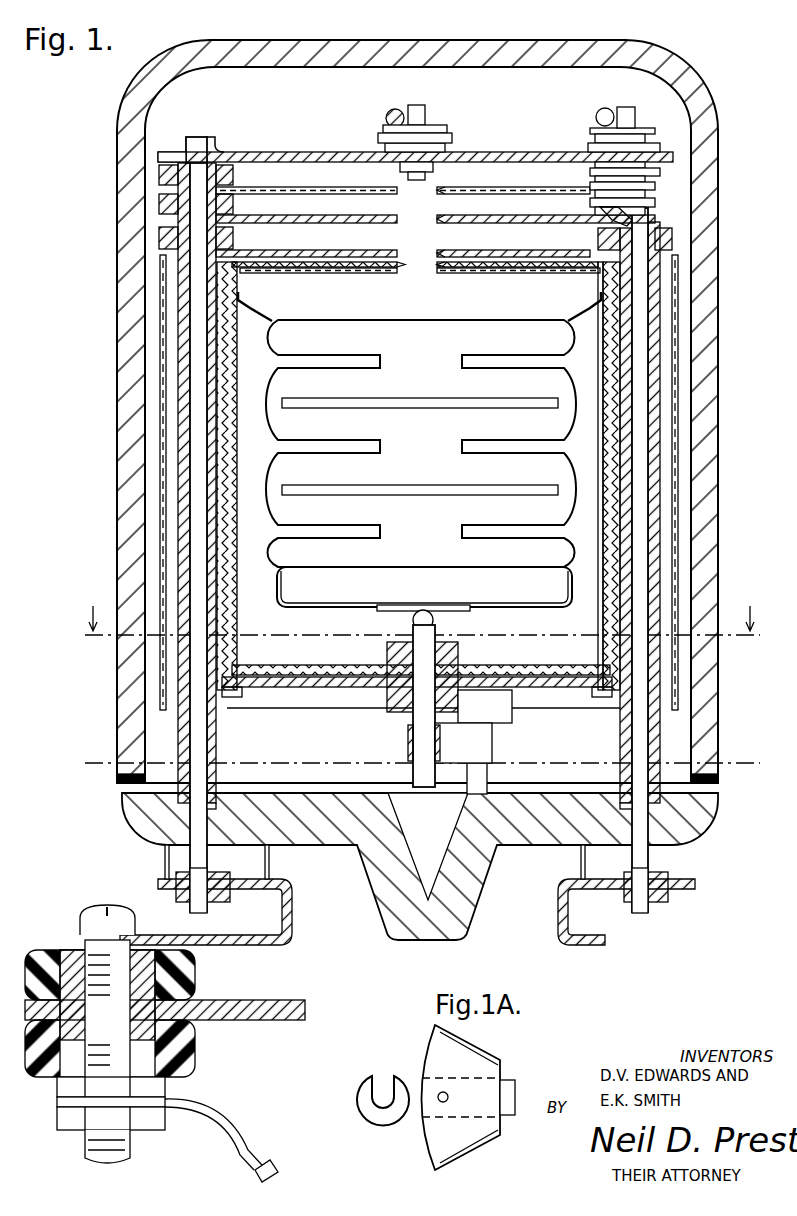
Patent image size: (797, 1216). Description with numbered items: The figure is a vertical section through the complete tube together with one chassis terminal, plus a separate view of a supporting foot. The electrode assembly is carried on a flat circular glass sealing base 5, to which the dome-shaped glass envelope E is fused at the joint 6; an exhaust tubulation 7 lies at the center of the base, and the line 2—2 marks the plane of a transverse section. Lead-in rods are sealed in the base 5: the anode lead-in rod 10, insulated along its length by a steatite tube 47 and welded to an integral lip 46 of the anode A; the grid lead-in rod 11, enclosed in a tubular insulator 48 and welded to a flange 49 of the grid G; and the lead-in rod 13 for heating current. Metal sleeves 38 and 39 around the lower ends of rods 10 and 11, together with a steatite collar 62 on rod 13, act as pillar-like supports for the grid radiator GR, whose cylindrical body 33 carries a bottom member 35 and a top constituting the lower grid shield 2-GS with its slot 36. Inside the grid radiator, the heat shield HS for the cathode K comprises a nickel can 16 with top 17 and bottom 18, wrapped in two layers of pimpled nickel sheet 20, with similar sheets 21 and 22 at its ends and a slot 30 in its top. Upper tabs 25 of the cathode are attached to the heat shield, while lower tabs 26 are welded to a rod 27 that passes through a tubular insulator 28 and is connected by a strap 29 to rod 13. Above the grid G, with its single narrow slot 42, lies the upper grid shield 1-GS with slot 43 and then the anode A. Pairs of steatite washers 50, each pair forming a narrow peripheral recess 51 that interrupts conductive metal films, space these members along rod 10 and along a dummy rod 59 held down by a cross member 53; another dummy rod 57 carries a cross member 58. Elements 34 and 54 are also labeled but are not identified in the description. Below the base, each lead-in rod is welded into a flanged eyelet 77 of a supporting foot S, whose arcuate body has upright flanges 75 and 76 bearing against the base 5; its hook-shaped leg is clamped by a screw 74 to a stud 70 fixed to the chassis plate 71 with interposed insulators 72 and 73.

In FIG. 1, the glass envelope E is at (125, 482).
In FIG. 1, the fused joint 6 is at (125, 778).
In FIG. 1, the mounting stem or sealing base 5 is at (340, 842).
In FIG. 1, the section line 2 is at (417, 763).
In FIG. 1, the exhaust tubulation 7 is at (392, 925).
In FIG. 1, the lead-in rod 13 is at (487, 778).
In FIG. 1, the insulating tube 47 is at (180, 525).
In FIG. 1, the anode lead-in rod 10 is at (186, 145).
In FIG. 1, the anode flange or lip 46 is at (214, 148).
In FIG. 1, the tubular insulator 48 is at (660, 372).
In FIG. 1, the grid lead-in rod 11 is at (648, 220).
In FIG. 1, the cylindrical body 33 is at (680, 448).
In FIG. 1, the grid radiator GR is at (160, 380).
In FIG. 1, the heat shield HS is at (237, 410).
In FIG. 1, the pimpled nickel sheet 20 is at (608, 552).
In FIG. 1, the insulating plate 34 is at (300, 252).
In FIG. 1, the lower grid shield 2-GS is at (338, 253).
In FIG. 1, the slot 36 is at (448, 241).
In FIG. 1, the anode A is at (262, 152).
In FIG. 1, the slot 43 is at (420, 170).
In FIG. 1, the anode connector 54 is at (428, 174).
In FIG. 1, the upper grid shield 1-GS is at (403, 180).
In FIG. 1, the grid G is at (345, 216).
In FIG. 1, the slot 42 is at (448, 208).
In FIG. 1, the pimpled nickel sheet 21 is at (394, 268).
In FIG. 1, the discharge opening 30 is at (440, 268).
In FIG. 1, the top end 17 is at (318, 273).
In FIG. 1, the insulator washers 50 is at (380, 140).
In FIG. 1, the peripheral recess 51 is at (159, 168).
In FIG. 1, the cross member 58 is at (388, 112).
In FIG. 1, the dummy rod 57 is at (425, 114).
In FIG. 1, the cross member 53 is at (597, 114).
In FIG. 1, the dummy rod 59 is at (630, 108).
In FIG. 1, the grid flange 49 is at (600, 209).
In FIG. 1, the heat shield can 16 is at (610, 455).
In FIG. 1, the cathode K is at (268, 535).
In FIG. 1, the tabs 25 is at (262, 315).
In FIG. 1, the tabs 26 is at (322, 603).
In FIG. 1, the bottom end 18 is at (266, 665).
In FIG. 1, the pimpled nickel sheet 22 is at (320, 688).
In FIG. 1, the bottom member 35 is at (270, 690).
In FIG. 1, the tubular insulator 28 is at (450, 660).
In FIG. 1, the cathode connecting rod 27 is at (434, 620).
In FIG. 1, the insulator collar 62 is at (505, 700).
In FIG. 1, the strap 29 is at (408, 743).
In FIG. 1, the metal sleeve 38 is at (216, 778).
In FIG. 1, the metal sleeve 39 is at (620, 778).
In FIG. 1, the supporting element or foot S is at (282, 913).
In FIG. 1A, the supporting element or foot S is at (428, 1041).
In FIG. 1, the upright flange 75 is at (165, 860).
In FIG. 1A, the upright flange 75 is at (462, 1044).
In FIG. 1, the upright flange 76 is at (581, 860).
In FIG. 1A, the upright flange 76 is at (462, 1155).
In FIG. 1, the flanged eyelet 77 is at (180, 896).
In FIG. 1, the screw 74 is at (90, 920).
In FIG. 1, the insulator 72 is at (195, 983).
In FIG. 1, the insulator 73 is at (195, 1050).
In FIG. 1, the chassis plate 71 is at (300, 1010).
In FIG. 1, the stud 70 is at (165, 950).